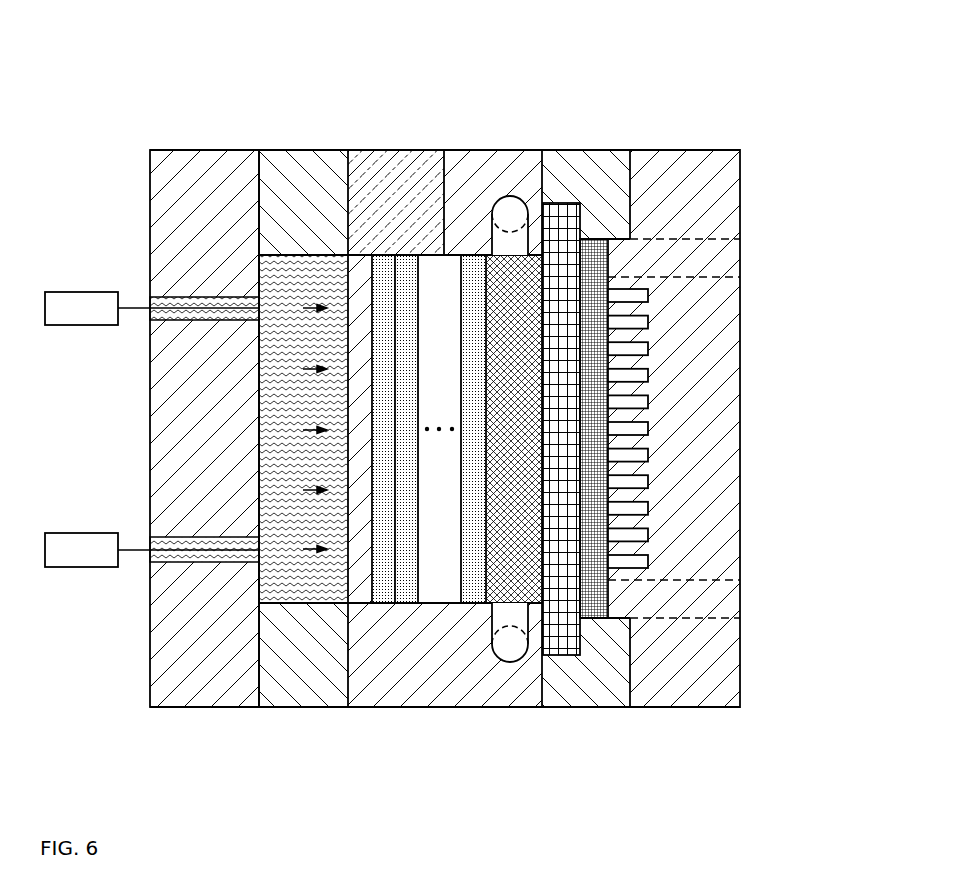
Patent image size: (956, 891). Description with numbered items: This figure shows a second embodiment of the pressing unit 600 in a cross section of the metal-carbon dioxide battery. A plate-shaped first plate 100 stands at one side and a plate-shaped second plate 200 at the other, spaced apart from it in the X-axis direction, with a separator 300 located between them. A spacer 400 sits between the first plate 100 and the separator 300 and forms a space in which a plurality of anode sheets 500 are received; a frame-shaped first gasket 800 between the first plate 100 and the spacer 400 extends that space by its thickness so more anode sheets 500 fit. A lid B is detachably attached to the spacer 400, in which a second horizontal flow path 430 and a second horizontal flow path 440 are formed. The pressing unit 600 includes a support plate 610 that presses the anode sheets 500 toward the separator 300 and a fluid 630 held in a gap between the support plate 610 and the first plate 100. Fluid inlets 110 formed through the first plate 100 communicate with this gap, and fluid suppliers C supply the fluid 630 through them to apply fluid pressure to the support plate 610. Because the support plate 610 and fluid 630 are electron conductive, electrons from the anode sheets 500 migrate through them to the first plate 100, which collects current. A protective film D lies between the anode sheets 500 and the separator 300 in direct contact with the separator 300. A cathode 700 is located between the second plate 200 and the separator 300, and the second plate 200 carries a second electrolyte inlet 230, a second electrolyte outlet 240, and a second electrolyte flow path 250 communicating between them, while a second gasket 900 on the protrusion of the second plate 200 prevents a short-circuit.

The first plate 100 is at (210, 709).
The fluid inlets 110 is at (180, 290).
The second plate 200 is at (490, 472).
The second electrolyte inlet 230 is at (718, 602).
The second electrolyte outlet 240 is at (708, 263).
The second electrolyte flow path 250 is at (652, 371).
The separator 300 is at (561, 212).
The spacer 400 is at (377, 709).
The second horizontal flow path 430 is at (505, 650).
The second horizontal flow path 440 is at (510, 205).
The anode sheets 500 is at (408, 595).
The pressing unit 600 is at (309, 328).
The support plate 610 is at (360, 257).
The fluid 630 is at (302, 296).
The cathode 700 is at (596, 242).
The first gasket 800 is at (305, 709).
The second gasket 900 is at (587, 709).
The lid B is at (390, 152).
The fluid suppliers C is at (83, 533).
The protective film D is at (510, 431).